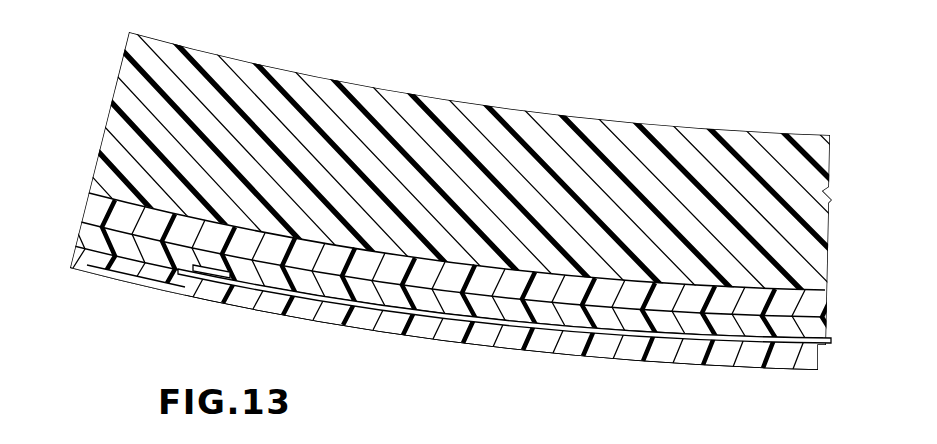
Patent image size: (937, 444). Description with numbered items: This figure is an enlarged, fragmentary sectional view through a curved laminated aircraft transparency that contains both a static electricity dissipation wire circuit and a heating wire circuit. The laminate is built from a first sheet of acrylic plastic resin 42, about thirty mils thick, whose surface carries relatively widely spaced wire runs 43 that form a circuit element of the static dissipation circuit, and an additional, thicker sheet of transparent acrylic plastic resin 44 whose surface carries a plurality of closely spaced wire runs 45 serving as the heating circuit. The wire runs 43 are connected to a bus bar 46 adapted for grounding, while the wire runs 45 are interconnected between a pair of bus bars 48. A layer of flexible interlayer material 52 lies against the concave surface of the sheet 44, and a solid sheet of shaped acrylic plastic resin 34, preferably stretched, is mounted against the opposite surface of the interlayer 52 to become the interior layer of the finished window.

The solid sheet of shaped acrylic plastic resin 34 is at (110, 118).
The additional sheet of transparent acrylic plastic resin 44 is at (87, 230).
The layer of flexible interlayer material 52 is at (813, 303).
The bus bar 46 is at (127, 280).
The closely spaced wire runs 45 is at (826, 336).
The bus bars 48 is at (223, 272).
The first sheet of acrylic plastic resin 42 is at (815, 358).
The widely spaced wire runs 43 is at (158, 280).